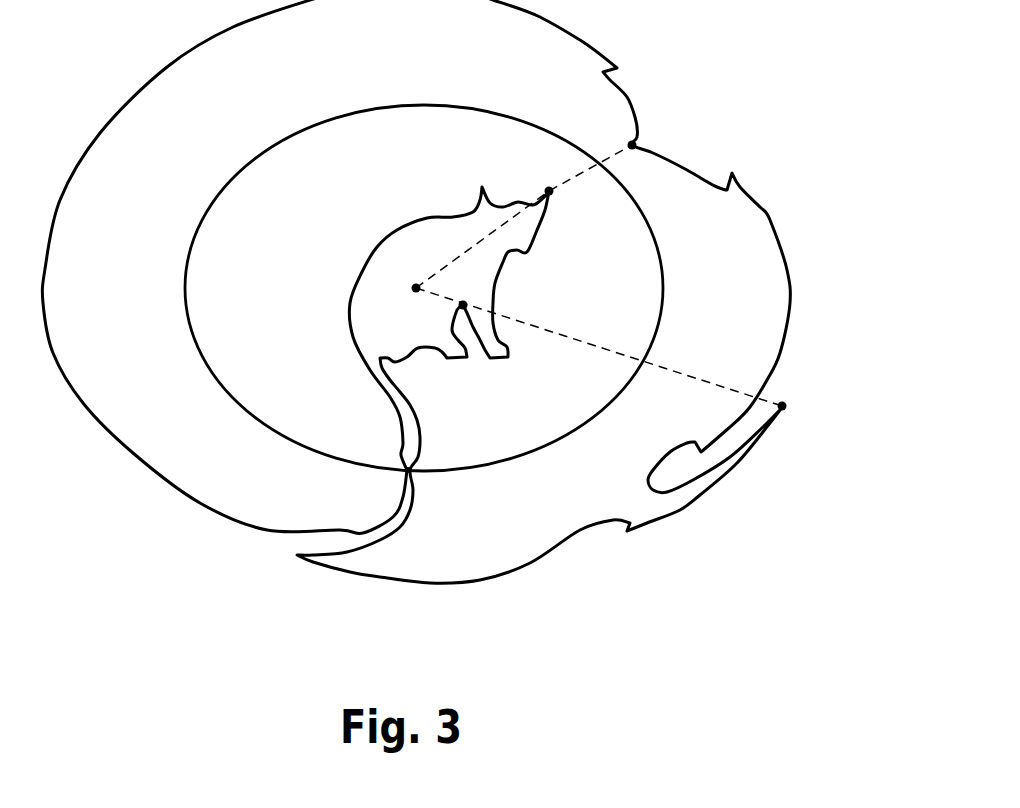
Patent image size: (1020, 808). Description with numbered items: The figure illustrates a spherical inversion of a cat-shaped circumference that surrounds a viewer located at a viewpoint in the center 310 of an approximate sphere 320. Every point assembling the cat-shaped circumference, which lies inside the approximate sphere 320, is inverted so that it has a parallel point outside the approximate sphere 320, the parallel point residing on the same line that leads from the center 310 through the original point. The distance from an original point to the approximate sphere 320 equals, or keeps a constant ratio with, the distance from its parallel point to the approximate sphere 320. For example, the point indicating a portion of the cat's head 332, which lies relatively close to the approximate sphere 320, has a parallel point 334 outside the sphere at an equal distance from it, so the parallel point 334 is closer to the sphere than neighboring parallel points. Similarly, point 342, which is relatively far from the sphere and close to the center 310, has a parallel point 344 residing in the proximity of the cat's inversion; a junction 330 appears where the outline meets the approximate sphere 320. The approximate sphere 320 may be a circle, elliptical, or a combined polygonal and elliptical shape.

The center 310 is at (416, 288).
The approximate sphere 320 is at (223, 393).
The junction point of outline 330 is at (410, 470).
The point indicating a portion of the cat's head 332 is at (549, 191).
The parallel point 334 is at (632, 145).
The point 342 is at (463, 305).
The parallel point 344 is at (782, 406).